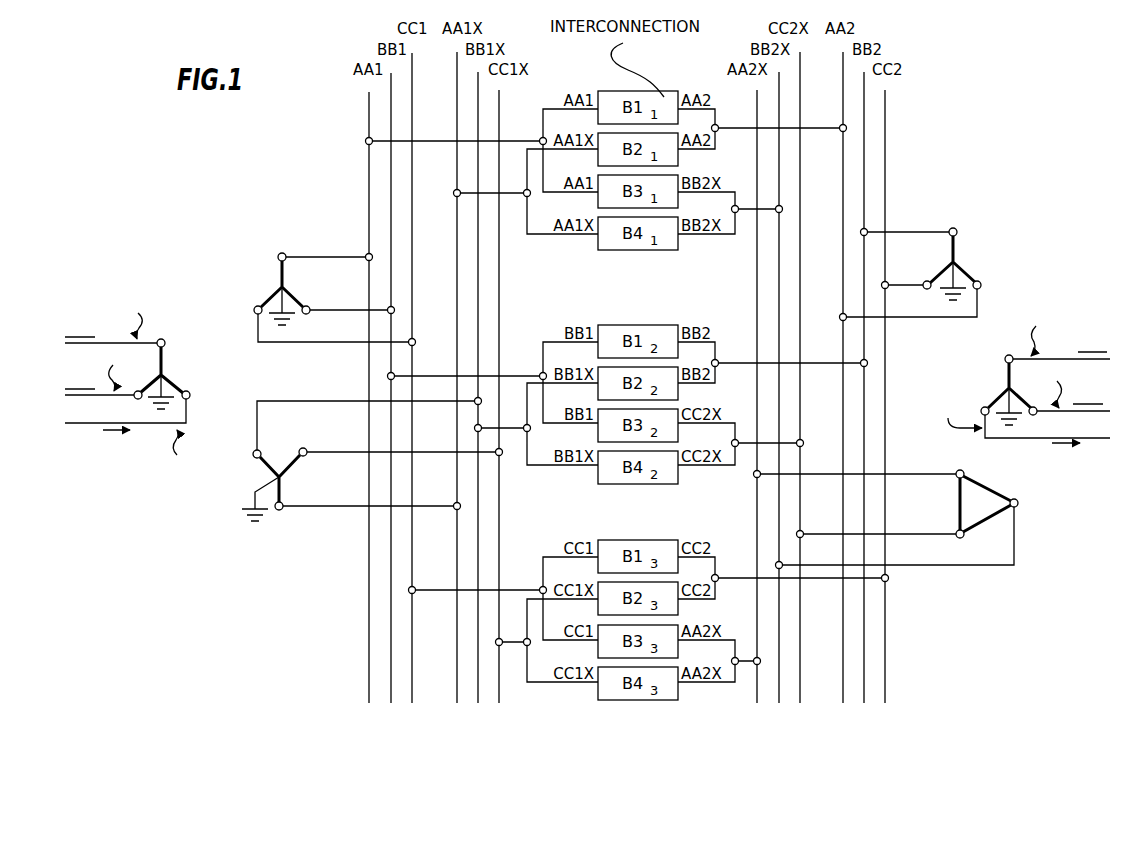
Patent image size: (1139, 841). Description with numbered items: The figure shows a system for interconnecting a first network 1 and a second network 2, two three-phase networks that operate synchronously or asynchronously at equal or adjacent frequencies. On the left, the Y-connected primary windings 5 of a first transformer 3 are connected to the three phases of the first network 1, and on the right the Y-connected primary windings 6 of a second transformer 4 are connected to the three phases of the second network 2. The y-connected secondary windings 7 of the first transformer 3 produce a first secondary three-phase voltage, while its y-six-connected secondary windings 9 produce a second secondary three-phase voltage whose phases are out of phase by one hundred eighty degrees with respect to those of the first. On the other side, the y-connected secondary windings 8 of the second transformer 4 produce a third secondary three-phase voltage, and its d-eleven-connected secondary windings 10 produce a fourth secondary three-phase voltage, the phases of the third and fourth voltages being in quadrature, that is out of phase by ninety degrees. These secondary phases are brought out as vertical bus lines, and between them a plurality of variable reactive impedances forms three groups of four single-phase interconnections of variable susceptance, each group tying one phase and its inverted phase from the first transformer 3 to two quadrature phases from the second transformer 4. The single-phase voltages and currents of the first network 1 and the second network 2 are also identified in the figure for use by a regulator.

The first network 1 is at (57, 328).
The second network 2 is at (1108, 343).
The first transformer 3 is at (196, 322).
The second transformer 4 is at (991, 328).
The Y-connected primary windings 5 is at (173, 372).
The Y-connected primary windings 6 is at (1000, 392).
The y-connected secondary windings 7 is at (267, 298).
The y-connected secondary windings 8 is at (965, 273).
The y6-connected secondary windings 9 is at (276, 468).
The d11-connected secondary windings 10 is at (993, 487).